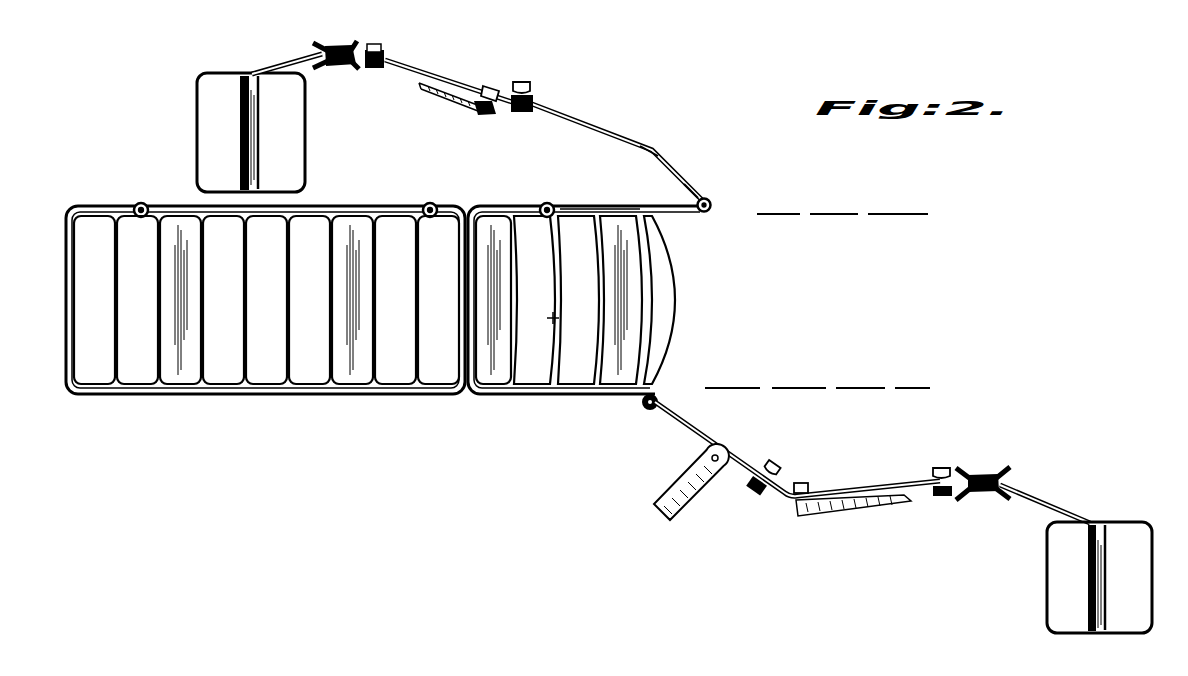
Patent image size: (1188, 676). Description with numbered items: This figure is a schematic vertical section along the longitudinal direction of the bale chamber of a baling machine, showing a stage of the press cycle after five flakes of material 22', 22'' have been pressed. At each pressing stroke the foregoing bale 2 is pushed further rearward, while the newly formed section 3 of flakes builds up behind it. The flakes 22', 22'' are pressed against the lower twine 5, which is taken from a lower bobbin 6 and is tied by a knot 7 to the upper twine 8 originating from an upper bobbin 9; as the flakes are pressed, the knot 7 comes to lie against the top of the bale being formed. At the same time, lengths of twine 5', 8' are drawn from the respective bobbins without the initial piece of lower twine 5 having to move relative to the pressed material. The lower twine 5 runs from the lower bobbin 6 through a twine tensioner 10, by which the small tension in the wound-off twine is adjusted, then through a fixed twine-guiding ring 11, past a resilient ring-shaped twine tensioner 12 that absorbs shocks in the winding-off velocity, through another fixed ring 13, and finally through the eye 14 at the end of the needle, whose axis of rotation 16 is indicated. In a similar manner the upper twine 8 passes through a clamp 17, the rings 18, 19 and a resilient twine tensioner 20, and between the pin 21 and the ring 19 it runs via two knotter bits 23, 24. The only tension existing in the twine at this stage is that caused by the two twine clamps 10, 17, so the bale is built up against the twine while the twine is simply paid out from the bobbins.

The foregoing bale 2 is at (222, 399).
The pivoting frame section 3 is at (706, 258).
The lower twine 5 is at (559, 353).
The length of twine 5' is at (872, 461).
The lower bobbin 6 is at (1130, 525).
The knot 7 is at (547, 203).
The upper twine 8 is at (477, 133).
The length of twine 8' is at (600, 194).
The upper bobbin 9 is at (197, 147).
The twine tensioner 10 is at (985, 470).
The twine-guiding ring 11 is at (940, 466).
The twine tensioner 12 is at (852, 514).
The ring 13 is at (780, 462).
The eye 14 is at (742, 442).
The axis of rotation 16 is at (550, 325).
The clamp 17 is at (325, 43).
The ring 18 is at (388, 48).
The ring 19 is at (524, 82).
The resilient twine tensioner 20 is at (447, 101).
The pin 21 is at (708, 199).
The flake 22' is at (493, 277).
The flake 22'' is at (689, 300).
The knotter bit 23 is at (645, 157).
The knotter bit 24 is at (690, 194).